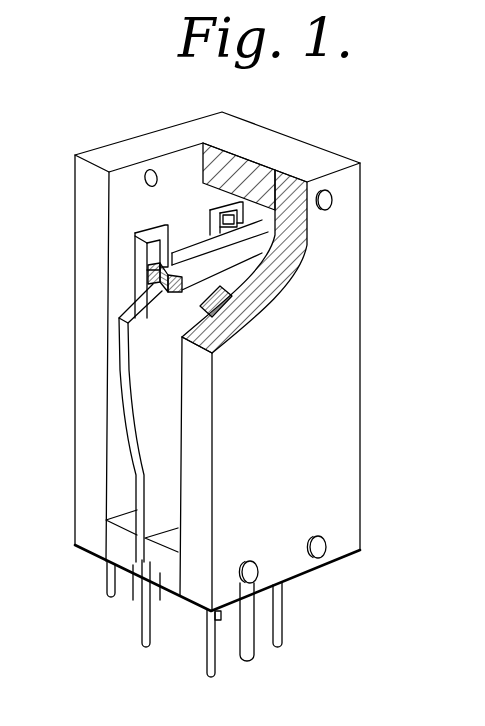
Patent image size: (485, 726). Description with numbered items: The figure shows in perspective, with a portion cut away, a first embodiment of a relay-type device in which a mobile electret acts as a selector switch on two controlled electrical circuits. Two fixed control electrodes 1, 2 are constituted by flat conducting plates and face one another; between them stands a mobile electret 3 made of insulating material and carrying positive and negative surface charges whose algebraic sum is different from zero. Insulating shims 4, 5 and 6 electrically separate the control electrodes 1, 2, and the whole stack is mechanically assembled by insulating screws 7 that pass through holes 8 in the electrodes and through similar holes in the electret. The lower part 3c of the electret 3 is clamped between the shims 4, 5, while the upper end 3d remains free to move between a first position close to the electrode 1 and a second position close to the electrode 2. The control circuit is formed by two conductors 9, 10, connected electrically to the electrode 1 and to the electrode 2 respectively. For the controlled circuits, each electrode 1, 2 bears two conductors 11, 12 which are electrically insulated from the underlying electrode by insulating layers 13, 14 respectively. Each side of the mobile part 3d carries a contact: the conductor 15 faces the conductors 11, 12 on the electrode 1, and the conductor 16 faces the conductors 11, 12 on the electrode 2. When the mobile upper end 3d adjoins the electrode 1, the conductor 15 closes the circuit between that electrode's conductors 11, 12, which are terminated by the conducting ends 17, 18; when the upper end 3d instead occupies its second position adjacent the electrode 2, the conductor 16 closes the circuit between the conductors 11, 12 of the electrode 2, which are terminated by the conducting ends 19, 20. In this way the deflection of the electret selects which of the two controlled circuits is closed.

The control electrode 1 is at (85, 333).
The control electrode 2 is at (338, 405).
The mobile electret 3 is at (127, 387).
The lower part of the electret 3c is at (140, 553).
The upper end of the electret 3d is at (262, 234).
The insulating shim 4 is at (160, 575).
The insulating shim 5 is at (132, 567).
The insulating shim 6 is at (284, 146).
The insulating screw 7 is at (333, 199).
The hole 8 is at (150, 170).
The conductor 9 is at (107, 593).
The conductor 10 is at (247, 647).
The conductor 11 is at (153, 258).
The conductor 12 is at (226, 218).
The insulating layer 13 is at (152, 238).
The insulating layer 14 is at (223, 208).
The conductor 15 is at (152, 277).
The conductor 16 is at (245, 263).
The conducting end 17 is at (142, 640).
The conducting end 18 is at (218, 621).
The conducting end 19 is at (207, 657).
The conducting end 20 is at (283, 622).